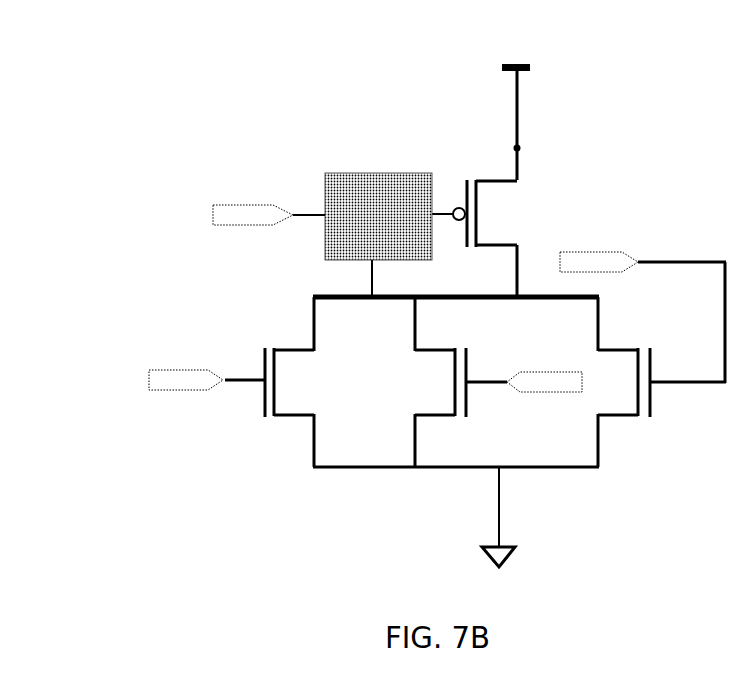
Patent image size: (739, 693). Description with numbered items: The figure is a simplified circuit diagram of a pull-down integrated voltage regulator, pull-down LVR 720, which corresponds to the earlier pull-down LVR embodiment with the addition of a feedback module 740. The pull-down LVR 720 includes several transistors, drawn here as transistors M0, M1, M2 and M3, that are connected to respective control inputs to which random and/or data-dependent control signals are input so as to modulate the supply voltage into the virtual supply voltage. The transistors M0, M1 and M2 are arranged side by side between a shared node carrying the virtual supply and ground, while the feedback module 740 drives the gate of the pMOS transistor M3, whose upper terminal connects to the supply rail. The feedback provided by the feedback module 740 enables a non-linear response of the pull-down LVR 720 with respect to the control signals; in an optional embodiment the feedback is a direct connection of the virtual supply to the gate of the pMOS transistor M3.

The pull-down LVR 720 is at (106, 129).
The feedback module 740 is at (400, 200).
The transistor M0 is at (289, 372).
The transistor M1 is at (440, 372).
The transistor M2 is at (624, 372).
The transistor M3 is at (485, 203).